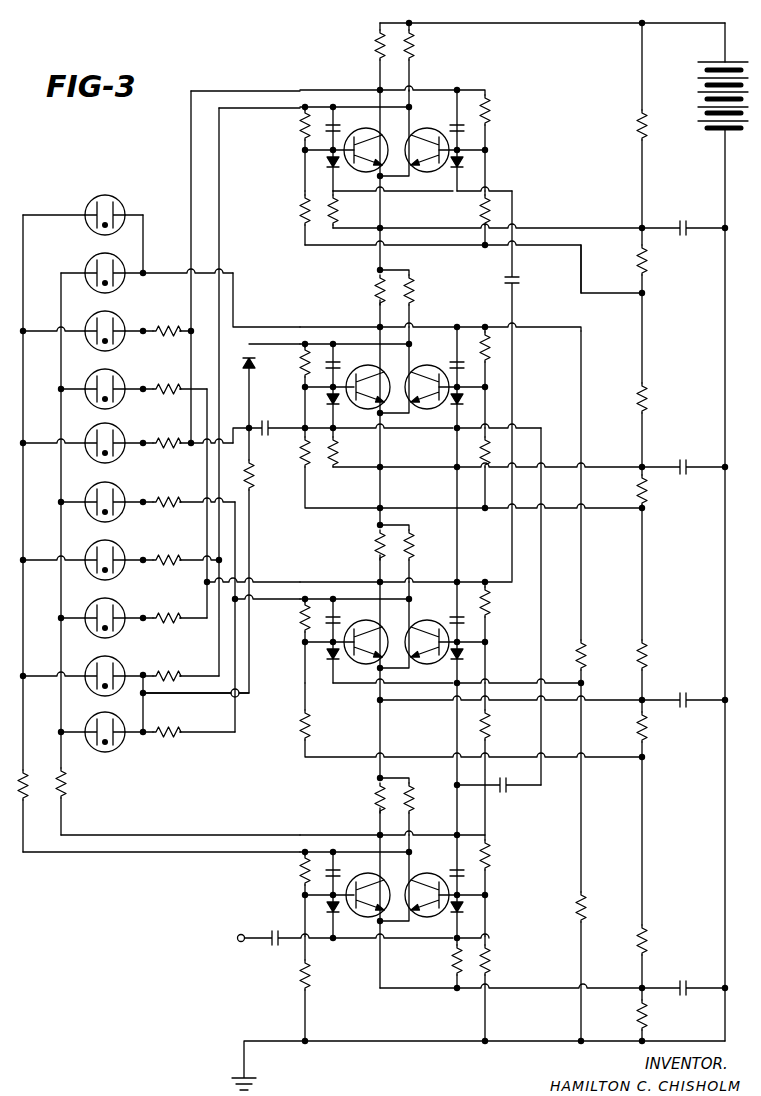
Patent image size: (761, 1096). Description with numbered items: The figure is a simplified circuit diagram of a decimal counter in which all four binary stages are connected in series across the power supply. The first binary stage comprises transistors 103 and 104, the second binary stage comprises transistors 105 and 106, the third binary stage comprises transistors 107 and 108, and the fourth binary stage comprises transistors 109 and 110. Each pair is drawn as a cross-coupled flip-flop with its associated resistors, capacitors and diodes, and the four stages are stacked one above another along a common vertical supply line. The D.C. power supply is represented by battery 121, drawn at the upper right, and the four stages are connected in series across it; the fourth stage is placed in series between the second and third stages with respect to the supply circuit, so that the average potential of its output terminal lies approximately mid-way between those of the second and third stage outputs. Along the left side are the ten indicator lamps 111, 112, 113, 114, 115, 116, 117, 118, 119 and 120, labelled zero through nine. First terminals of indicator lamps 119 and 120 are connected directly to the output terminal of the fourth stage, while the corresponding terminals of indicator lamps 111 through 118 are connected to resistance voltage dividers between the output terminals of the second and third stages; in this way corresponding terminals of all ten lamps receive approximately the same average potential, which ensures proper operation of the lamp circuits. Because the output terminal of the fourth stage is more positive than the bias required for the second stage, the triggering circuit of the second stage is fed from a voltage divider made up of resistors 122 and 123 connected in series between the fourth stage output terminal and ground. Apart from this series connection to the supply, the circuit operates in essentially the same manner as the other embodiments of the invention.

The transistor 103 is at (380, 878).
The transistor 104 is at (452, 878).
The transistor 105 is at (376, 625).
The transistor 106 is at (448, 625).
The transistor 107 is at (374, 134).
The transistor 108 is at (444, 134).
The transistor 109 is at (375, 371).
The transistor 110 is at (446, 371).
The indicator lamp 111 is at (93, 723).
The indicator lamp 112 is at (93, 667).
The indicator lamp 113 is at (93, 609).
The indicator lamp 114 is at (93, 551).
The indicator lamp 115 is at (93, 493).
The indicator lamp 116 is at (93, 434).
The indicator lamp 117 is at (93, 380).
The indicator lamp 118 is at (93, 322).
The indicator lamp 119 is at (93, 264).
The indicator lamp 120 is at (95, 205).
The battery 121 is at (704, 63).
The resistor 122 is at (587, 650).
The resistor 123 is at (587, 896).